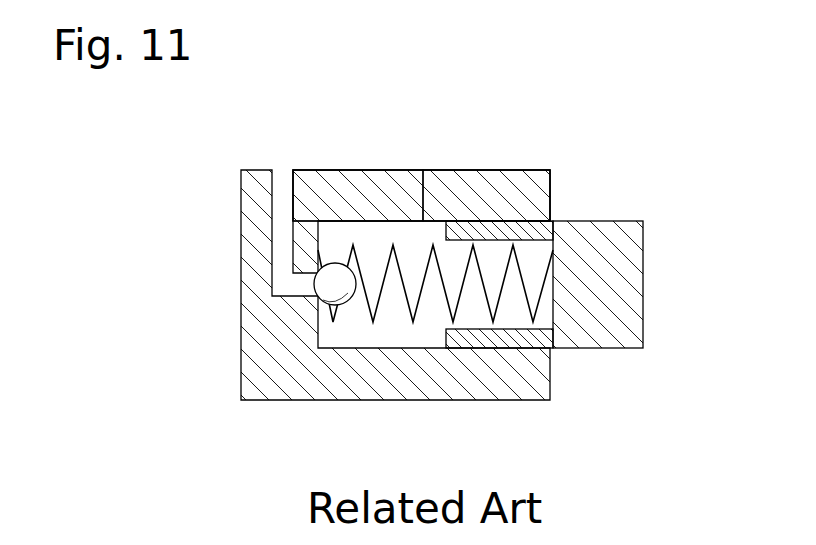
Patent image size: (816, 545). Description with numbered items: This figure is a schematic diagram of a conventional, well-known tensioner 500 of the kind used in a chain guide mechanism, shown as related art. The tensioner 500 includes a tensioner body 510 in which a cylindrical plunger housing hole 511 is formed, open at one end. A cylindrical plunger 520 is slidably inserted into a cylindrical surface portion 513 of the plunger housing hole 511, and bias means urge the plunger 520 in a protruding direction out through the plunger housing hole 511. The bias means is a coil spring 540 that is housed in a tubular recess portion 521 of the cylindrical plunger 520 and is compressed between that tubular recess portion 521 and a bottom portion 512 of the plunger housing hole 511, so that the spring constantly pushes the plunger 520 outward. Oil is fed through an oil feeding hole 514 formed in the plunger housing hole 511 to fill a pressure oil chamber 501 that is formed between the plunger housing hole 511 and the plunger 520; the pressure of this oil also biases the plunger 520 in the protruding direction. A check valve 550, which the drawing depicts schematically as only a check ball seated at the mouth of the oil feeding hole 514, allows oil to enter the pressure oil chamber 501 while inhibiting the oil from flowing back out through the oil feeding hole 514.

The tensioner 500 is at (626, 112).
The tensioner body 510 is at (347, 377).
The plunger housing hole 511 is at (436, 114).
The bottom portion 512 is at (328, 223).
The cylindrical surface portion 513 is at (428, 222).
The oil feeding hole 514 is at (283, 170).
The pressure oil chamber 501 is at (395, 310).
The plunger 520 is at (632, 305).
The tubular recess portion 521 is at (508, 246).
The coil spring 540 is at (503, 295).
The check valve 550 is at (314, 284).